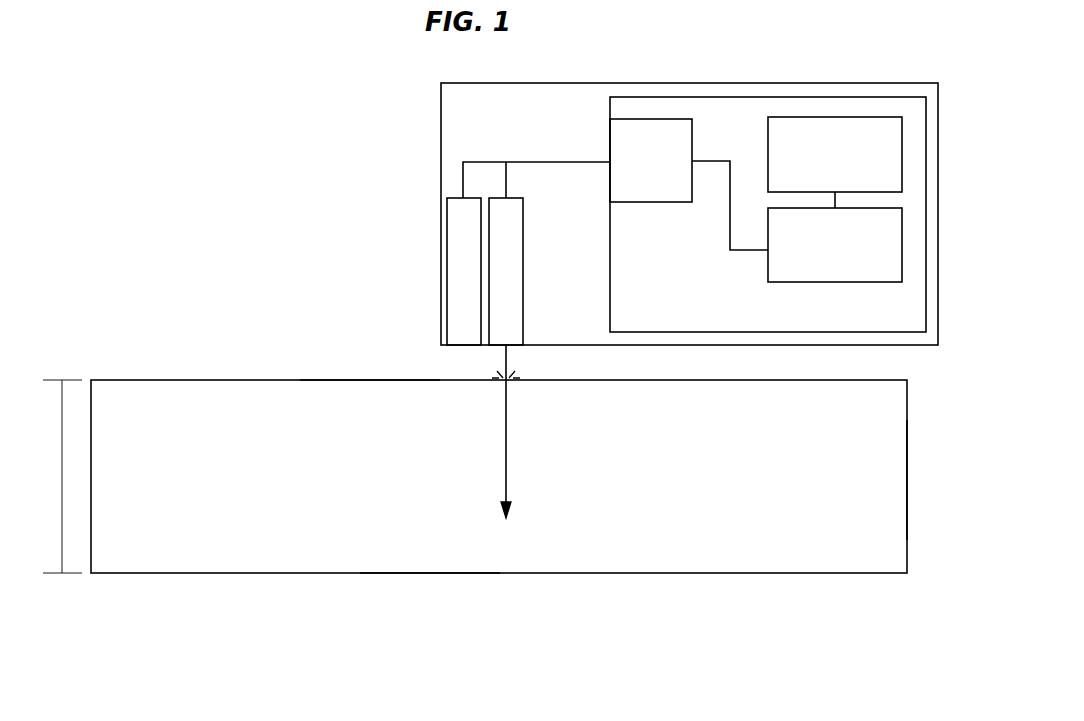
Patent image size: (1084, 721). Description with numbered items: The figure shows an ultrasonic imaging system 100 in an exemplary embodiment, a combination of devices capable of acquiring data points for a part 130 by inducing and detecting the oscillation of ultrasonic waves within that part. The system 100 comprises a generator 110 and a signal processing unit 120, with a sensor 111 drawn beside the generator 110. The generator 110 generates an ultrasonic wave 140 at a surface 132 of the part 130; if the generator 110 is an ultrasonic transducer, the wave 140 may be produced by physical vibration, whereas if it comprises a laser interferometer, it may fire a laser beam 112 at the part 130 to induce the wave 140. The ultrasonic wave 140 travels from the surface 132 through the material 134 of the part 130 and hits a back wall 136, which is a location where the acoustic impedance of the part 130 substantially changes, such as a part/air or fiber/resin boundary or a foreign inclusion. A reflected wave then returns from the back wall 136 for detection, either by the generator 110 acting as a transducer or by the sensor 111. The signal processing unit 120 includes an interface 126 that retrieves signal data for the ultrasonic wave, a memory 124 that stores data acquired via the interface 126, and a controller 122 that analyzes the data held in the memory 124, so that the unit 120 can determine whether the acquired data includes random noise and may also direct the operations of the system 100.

The ultrasonic imaging system 100 is at (388, 150).
The generator 110 is at (523, 270).
The sensor 111 is at (447, 270).
The laser beam 112 is at (508, 352).
The signal processing unit 120 is at (768, 214).
The controller 122 is at (835, 245).
The memory 124 is at (835, 154).
The interface 126 is at (651, 160).
The part 130 is at (222, 373).
The surface 132 is at (366, 378).
The material 134 is at (886, 503).
The back wall 136 is at (430, 574).
The ultrasonic wave 140 is at (508, 437).